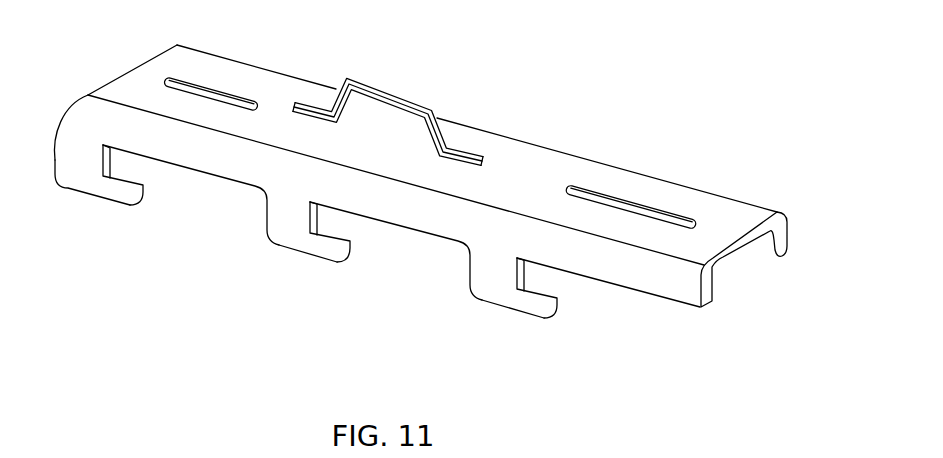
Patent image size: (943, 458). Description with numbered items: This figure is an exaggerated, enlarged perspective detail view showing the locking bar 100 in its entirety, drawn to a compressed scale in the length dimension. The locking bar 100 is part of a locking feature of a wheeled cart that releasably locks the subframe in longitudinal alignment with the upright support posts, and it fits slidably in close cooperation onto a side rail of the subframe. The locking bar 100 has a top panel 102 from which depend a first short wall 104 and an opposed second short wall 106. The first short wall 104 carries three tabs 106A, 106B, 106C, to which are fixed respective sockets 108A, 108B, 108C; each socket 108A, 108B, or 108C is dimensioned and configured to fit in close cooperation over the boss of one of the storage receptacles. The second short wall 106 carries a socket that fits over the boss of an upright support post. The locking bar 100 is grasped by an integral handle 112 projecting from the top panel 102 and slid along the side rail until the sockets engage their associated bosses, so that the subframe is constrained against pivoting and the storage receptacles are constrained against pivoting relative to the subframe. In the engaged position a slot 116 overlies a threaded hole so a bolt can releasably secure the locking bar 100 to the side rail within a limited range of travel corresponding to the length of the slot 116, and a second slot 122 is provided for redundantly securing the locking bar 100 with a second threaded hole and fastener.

The locking bar 100 is at (549, 88).
The top panel 102 is at (410, 148).
The first short wall 104 is at (427, 220).
The second short wall 106 is at (790, 228).
The tab 106A is at (557, 302).
The tab 106B is at (350, 249).
The tab 106C is at (147, 193).
The socket 108A is at (468, 327).
The socket 108B is at (288, 243).
The socket 108C is at (87, 186).
The integral handle 112 is at (400, 90).
The slot 116 is at (597, 198).
The second slot 122 is at (203, 92).